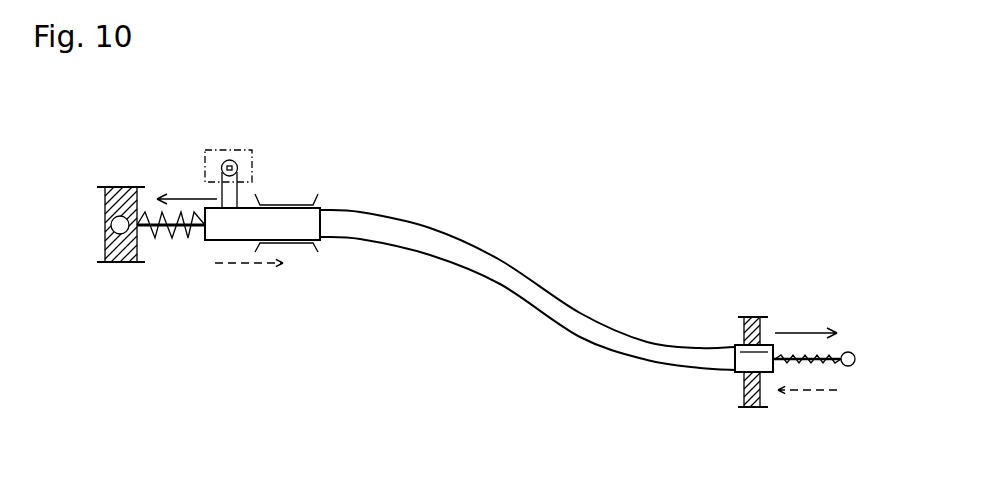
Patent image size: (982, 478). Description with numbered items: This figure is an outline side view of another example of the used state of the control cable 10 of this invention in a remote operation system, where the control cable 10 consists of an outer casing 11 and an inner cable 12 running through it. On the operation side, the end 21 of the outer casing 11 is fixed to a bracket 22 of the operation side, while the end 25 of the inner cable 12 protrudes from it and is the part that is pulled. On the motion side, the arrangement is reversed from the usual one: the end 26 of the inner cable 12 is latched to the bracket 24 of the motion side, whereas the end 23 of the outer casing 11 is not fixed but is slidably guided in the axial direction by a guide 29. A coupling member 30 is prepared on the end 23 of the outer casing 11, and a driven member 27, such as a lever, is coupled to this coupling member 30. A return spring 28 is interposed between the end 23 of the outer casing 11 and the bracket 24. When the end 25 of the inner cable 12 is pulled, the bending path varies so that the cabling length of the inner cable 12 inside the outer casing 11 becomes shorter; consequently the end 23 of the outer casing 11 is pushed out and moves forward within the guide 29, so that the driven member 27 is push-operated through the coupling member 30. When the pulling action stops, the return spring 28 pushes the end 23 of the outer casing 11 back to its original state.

The control cable 10 is at (527, 270).
The outer casing 11 is at (432, 228).
The inner cable 12 is at (787, 354).
The end of the outer casing on the operation side 21 is at (745, 368).
The bracket of operation side 22 is at (745, 332).
The end of the outer casing on the motion side 23 is at (305, 220).
The bracket of motion side 24 is at (123, 262).
The end of the inner cable on the operation side 25 is at (847, 368).
The end of the inner cable on the motion side 26 is at (111, 226).
The driven member 27 is at (228, 150).
The return spring 28 is at (182, 240).
The guide 29 is at (295, 251).
The coupling member 30 is at (241, 206).